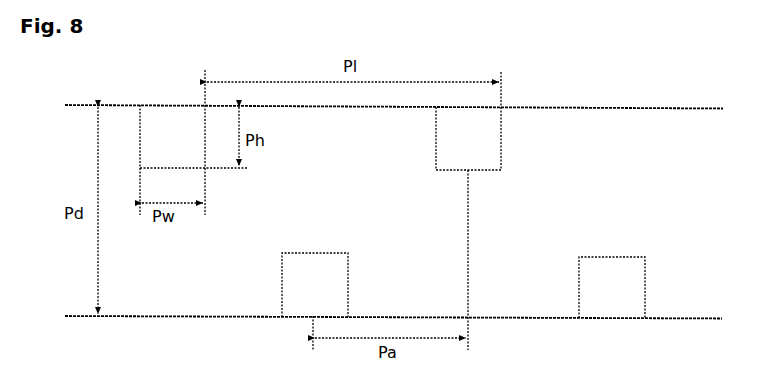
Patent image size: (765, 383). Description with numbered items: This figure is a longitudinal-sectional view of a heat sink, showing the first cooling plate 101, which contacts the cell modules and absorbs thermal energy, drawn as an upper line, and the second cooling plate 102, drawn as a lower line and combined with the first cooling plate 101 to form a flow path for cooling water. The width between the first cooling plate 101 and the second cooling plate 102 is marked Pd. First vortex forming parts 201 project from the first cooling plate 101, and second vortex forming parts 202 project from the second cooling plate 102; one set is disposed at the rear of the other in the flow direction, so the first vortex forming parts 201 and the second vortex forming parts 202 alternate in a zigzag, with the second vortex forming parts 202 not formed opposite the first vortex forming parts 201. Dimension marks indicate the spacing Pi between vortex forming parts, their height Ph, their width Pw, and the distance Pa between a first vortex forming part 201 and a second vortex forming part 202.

The first cooling plate 101 is at (619, 108).
The second cooling plate 102 is at (682, 317).
The first vortex forming part 201 is at (493, 128).
The second vortex forming part 202 is at (337, 273).